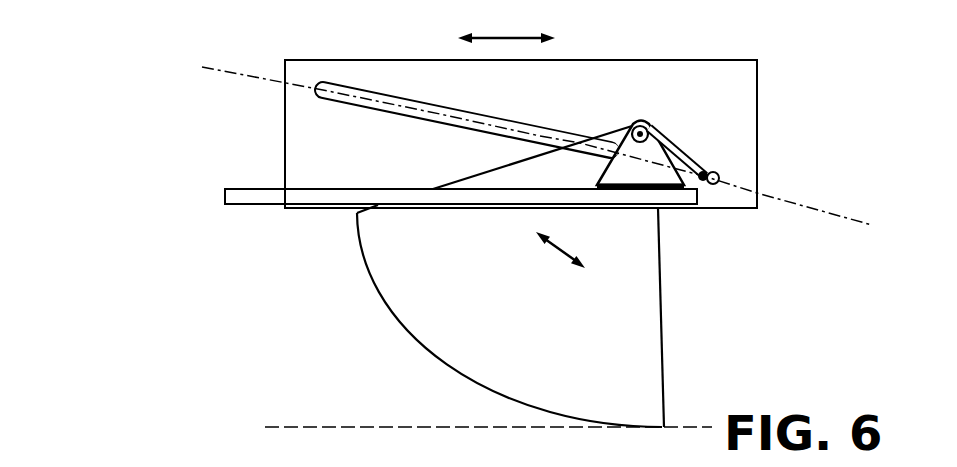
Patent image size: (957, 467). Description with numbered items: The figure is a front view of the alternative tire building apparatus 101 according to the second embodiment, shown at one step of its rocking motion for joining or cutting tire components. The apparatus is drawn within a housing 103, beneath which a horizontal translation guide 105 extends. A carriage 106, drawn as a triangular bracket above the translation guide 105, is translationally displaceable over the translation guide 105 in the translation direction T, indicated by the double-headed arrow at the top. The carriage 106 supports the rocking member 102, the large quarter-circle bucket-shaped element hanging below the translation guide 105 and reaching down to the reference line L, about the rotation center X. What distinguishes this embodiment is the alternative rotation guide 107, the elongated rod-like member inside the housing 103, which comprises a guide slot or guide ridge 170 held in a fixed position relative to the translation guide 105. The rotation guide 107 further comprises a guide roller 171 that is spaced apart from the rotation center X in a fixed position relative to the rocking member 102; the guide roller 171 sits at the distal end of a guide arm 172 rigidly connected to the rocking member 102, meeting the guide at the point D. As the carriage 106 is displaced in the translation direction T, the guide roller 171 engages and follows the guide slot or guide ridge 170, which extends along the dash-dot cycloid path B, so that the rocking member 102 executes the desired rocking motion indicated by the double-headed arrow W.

The alternative tire building apparatus 101 is at (142, 74).
The rocking member 102 is at (422, 300).
The housing 103 is at (743, 105).
The translation guide 105 is at (240, 197).
The carriage 106 is at (666, 152).
The alternative rotation guide 107 is at (436, 89).
The guide slot or guide ridge 170 is at (535, 123).
The guide roller 171 is at (712, 190).
The guide arm 172 is at (688, 162).
The cycloid path B is at (525, 135).
The point D is at (720, 179).
The ground line L is at (476, 427).
The translation direction T is at (506, 22).
The direction W is at (560, 258).
The rotation center X is at (640, 125).